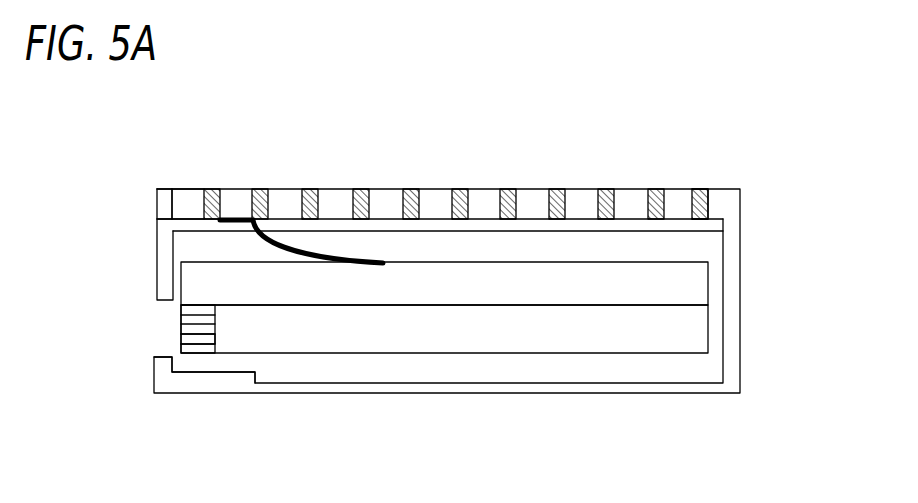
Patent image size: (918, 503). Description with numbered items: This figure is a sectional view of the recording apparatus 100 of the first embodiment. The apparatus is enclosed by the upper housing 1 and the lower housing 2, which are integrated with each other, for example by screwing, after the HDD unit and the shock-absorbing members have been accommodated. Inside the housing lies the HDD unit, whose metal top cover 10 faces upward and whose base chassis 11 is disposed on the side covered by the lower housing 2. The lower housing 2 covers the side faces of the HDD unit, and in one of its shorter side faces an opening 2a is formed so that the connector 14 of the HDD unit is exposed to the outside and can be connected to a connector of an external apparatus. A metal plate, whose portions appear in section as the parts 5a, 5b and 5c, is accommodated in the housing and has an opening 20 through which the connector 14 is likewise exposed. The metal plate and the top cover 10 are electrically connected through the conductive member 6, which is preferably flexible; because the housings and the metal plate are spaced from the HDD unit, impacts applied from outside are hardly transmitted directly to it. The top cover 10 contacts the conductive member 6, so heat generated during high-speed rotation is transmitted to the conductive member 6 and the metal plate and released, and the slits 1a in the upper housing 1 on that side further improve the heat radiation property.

The recording apparatus 100 is at (440, 142).
The upper housing 1 is at (488, 198).
The slits 1a is at (698, 189).
The lower housing 2 is at (487, 393).
The opening 2a is at (147, 254).
The first frame portion 5a is at (162, 247).
The second frame portion 5b is at (196, 227).
The third frame portion 5c is at (238, 380).
The conductive member 6 is at (285, 247).
The top cover 10 is at (702, 290).
The base chassis 11 is at (702, 338).
The connector 14 is at (195, 337).
The opening 20 is at (170, 328).